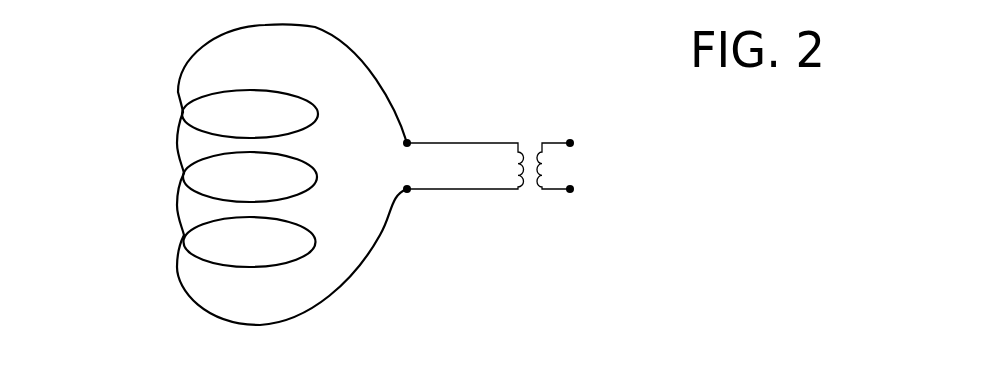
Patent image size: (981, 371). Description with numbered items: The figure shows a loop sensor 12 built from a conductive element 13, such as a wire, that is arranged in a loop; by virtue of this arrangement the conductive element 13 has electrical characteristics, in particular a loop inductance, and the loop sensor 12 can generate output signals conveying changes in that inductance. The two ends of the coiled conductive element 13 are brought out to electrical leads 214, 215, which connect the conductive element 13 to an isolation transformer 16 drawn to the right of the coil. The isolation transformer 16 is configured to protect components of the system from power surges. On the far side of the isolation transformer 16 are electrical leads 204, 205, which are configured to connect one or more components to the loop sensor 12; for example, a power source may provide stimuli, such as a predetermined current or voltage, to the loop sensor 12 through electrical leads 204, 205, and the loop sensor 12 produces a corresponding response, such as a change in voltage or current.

The loop sensor 12 is at (242, 343).
The conductive element 13 is at (168, 172).
The isolation transformer 16 is at (567, 217).
The electrical lead 214 is at (428, 132).
The electrical lead 215 is at (428, 179).
The electrical lead 204 is at (593, 142).
The electrical lead 205 is at (593, 189).